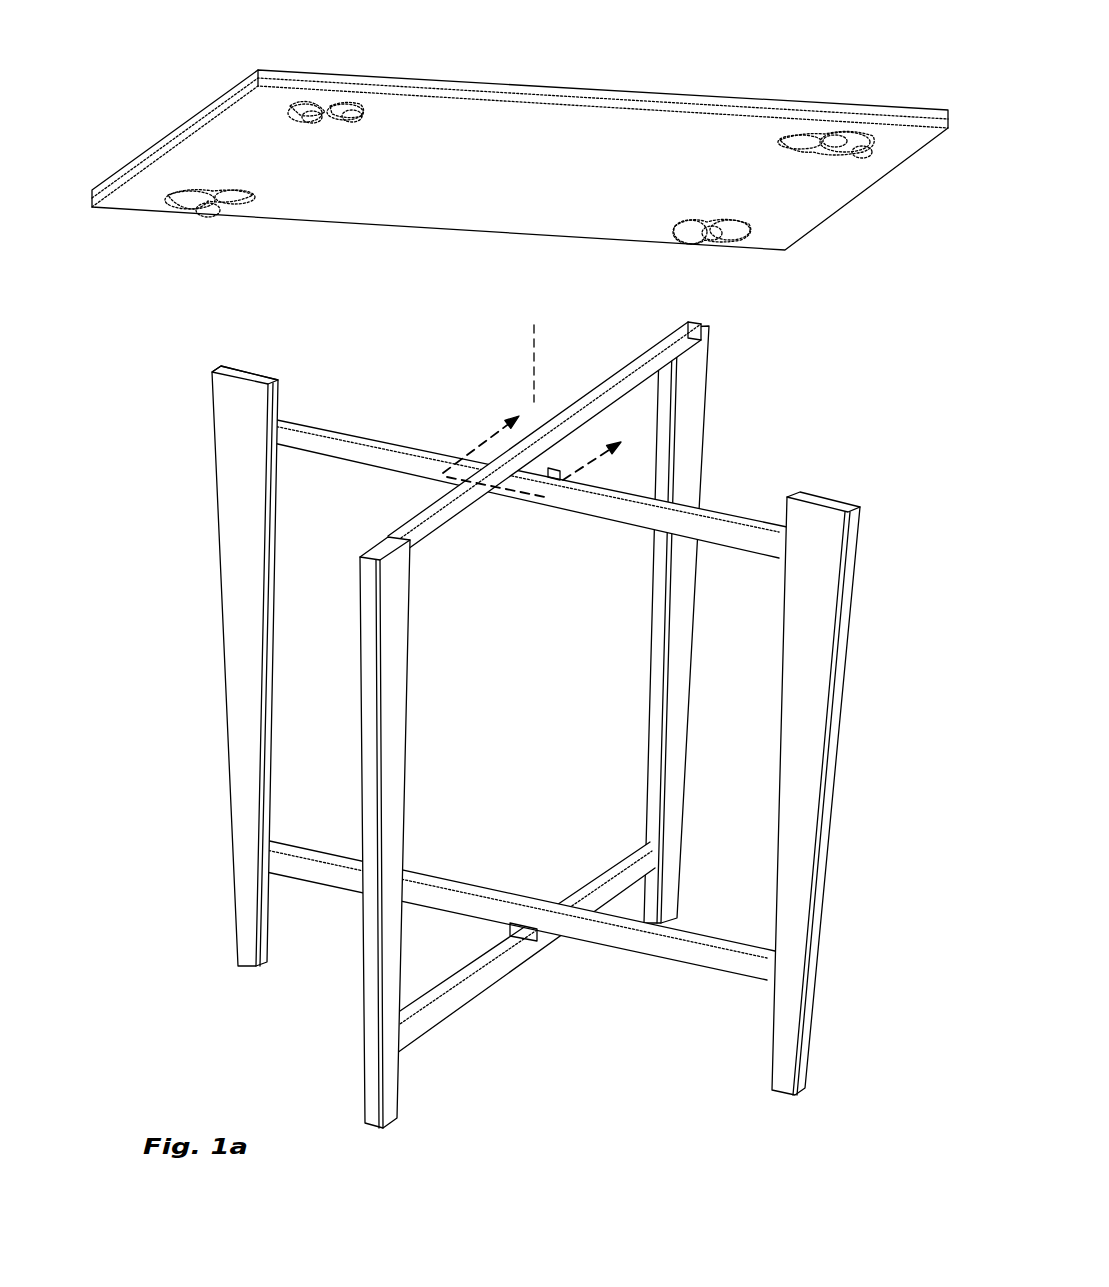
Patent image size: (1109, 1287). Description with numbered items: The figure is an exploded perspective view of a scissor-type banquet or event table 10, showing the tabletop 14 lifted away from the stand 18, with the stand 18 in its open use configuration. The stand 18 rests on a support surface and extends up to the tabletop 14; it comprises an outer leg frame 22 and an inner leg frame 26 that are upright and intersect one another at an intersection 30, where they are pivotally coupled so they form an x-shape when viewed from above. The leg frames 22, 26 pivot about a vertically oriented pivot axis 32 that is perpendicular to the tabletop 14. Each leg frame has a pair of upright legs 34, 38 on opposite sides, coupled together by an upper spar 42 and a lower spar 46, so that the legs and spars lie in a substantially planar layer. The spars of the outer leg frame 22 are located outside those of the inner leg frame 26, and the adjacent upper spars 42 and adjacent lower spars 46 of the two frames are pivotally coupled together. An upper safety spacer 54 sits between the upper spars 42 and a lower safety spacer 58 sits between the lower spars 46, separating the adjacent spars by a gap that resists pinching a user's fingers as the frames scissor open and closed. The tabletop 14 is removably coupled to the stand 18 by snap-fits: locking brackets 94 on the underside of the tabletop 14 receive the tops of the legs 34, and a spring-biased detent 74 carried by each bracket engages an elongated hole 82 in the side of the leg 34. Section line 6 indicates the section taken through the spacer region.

The table 10 is at (532, 725).
The tabletop 14 is at (520, 127).
The stand 18 is at (855, 793).
The outer leg frame 22 is at (398, 692).
The inner leg frame 26 is at (802, 607).
The intersection 30 is at (532, 893).
The pivot axis 32 is at (533, 360).
The upright leg 34 is at (317, 747).
The upright leg 38 is at (546, 725).
The upper spar 42 is at (732, 537).
The lower spar 46 is at (516, 933).
The upper safety spacer 54 is at (543, 468).
The lower safety spacer 58 is at (525, 935).
The detent 74 is at (310, 110).
The hole 82 is at (212, 377).
The locking bracket 94 is at (350, 110).
The section line 6- 6 is at (540, 444).